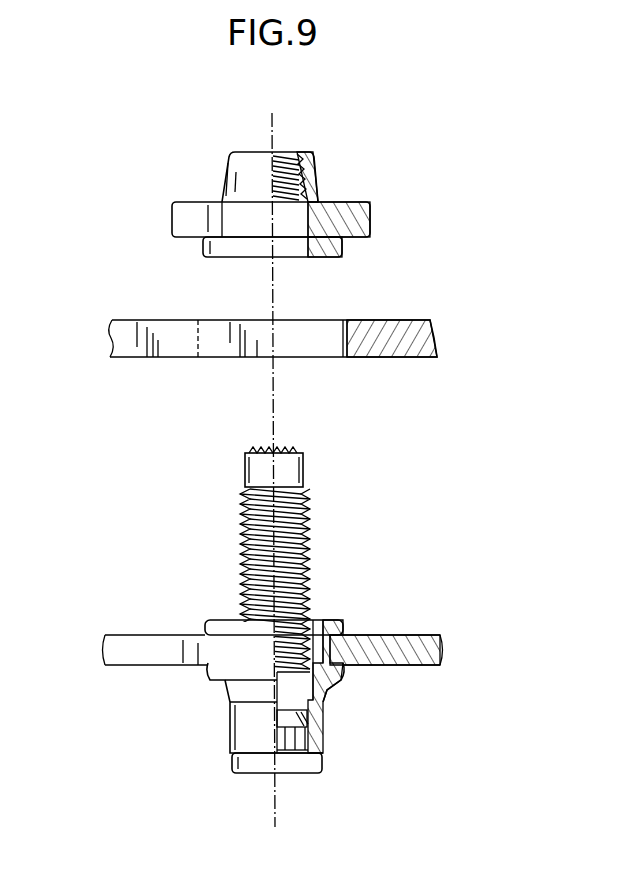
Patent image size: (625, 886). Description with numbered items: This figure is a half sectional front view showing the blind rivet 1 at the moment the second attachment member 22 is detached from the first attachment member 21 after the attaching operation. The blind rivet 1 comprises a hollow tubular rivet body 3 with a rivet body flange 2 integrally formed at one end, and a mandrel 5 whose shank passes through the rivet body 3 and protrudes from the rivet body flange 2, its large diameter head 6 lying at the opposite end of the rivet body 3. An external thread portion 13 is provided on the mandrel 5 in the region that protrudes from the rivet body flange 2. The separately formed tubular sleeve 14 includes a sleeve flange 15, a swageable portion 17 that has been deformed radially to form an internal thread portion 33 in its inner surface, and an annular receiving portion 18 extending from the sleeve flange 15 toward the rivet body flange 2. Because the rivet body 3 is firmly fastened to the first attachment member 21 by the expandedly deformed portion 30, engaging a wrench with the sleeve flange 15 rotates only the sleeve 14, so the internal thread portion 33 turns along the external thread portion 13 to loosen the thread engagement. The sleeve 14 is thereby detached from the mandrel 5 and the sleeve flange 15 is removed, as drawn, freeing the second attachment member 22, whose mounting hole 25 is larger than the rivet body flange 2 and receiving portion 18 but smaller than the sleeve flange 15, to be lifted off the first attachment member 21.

The blind rivet 1 is at (261, 631).
The rivet body flange 2 is at (285, 705).
The rivet body 3 is at (224, 730).
The mandrel 5 is at (240, 475).
The head 6 is at (253, 762).
The external thread portion 13 is at (242, 510).
The sleeve 14 is at (267, 173).
The sleeve flange 15 is at (370, 218).
The swageable portion 17 is at (320, 183).
The receiving portion 18 is at (342, 250).
The first attachment member 21 is at (430, 655).
The second attachment member 22 is at (300, 367).
The mounting hole 25 is at (338, 347).
The expandedly deformed portion 30 is at (343, 672).
The internal thread portion 33 is at (287, 152).